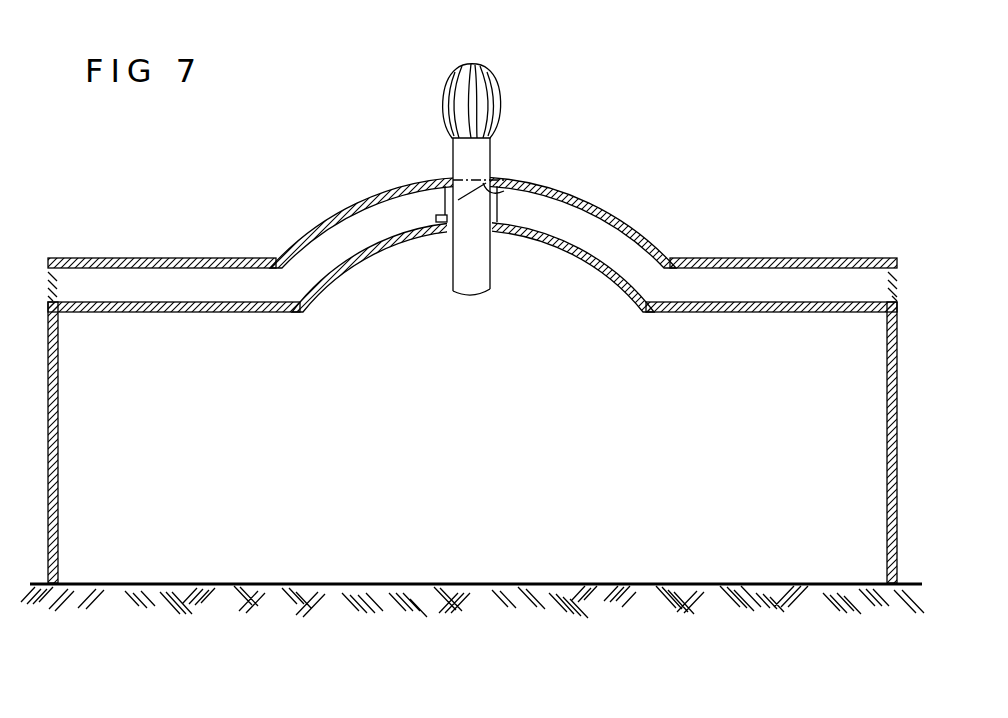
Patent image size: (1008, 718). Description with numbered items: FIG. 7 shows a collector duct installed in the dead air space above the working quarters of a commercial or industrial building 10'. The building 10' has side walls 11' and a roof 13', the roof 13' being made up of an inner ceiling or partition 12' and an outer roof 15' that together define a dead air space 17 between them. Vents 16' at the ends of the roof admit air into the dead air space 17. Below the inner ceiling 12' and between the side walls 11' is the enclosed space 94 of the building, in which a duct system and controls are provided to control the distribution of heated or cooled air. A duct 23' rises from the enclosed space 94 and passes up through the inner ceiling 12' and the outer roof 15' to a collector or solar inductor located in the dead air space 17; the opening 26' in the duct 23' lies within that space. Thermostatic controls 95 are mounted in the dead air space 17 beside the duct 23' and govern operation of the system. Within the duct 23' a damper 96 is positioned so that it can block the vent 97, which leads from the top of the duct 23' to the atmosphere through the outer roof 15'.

The commercial or industrial building 10' is at (472, 367).
The side walls 11' is at (472, 442).
The inner ceiling or partition 12' is at (472, 289).
The roof 13' is at (507, 222).
The outer roof 15' is at (472, 245).
The vents 16' is at (472, 287).
The dead air space 17 is at (801, 301).
The duct 23' is at (509, 223).
The pipe opening 26' is at (512, 204).
The enclosed space 94 is at (548, 503).
The thermostatic controls 95 is at (438, 212).
The damper 96 is at (480, 182).
The vent 97 is at (457, 148).